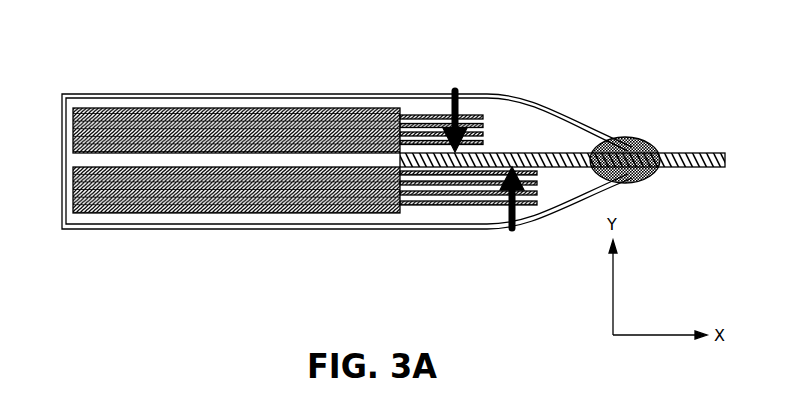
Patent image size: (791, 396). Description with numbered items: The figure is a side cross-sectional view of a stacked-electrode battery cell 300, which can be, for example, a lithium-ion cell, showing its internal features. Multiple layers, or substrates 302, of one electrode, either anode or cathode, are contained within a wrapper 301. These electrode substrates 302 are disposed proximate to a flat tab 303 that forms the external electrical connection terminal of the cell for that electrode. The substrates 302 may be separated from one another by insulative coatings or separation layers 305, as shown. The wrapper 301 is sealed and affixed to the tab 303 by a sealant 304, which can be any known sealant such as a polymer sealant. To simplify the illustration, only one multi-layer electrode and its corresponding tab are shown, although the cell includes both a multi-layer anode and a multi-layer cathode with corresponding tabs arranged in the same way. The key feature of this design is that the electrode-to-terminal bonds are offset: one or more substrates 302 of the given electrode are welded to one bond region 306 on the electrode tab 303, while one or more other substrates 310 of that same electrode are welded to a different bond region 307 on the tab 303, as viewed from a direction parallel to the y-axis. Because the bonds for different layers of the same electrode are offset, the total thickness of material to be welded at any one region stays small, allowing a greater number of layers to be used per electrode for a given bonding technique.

The stacked-electrode battery cell 300 is at (659, 62).
The wrapper 301 is at (553, 112).
The substrates 302 is at (223, 109).
The flat tab 303 is at (690, 153).
The sealant 304 is at (628, 137).
The separation layers 305 is at (107, 108).
The bond region 306 is at (459, 89).
The bond region 307 is at (505, 215).
The substrates 310 is at (263, 213).